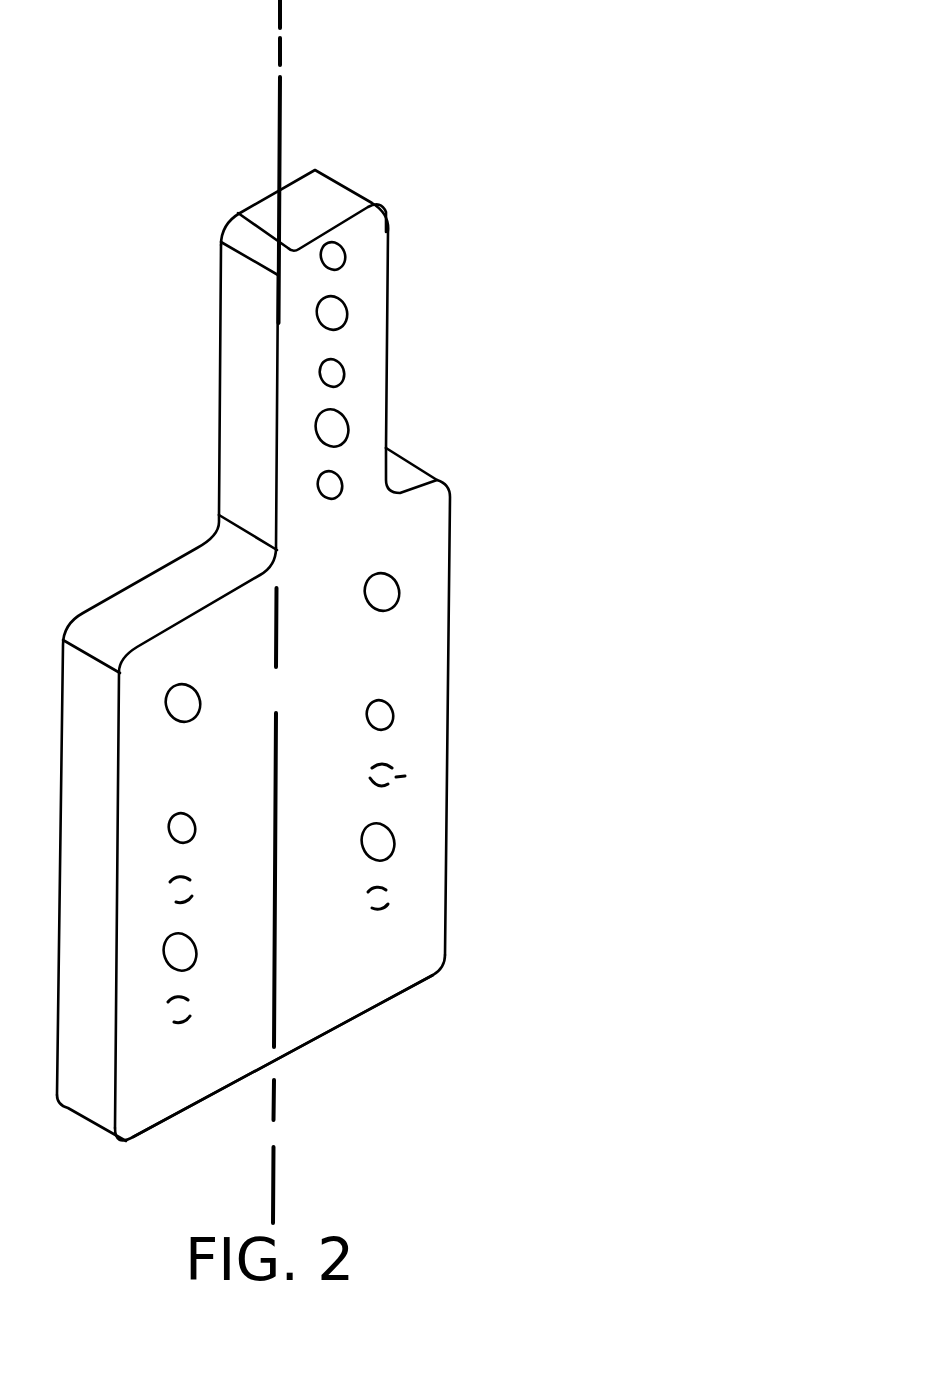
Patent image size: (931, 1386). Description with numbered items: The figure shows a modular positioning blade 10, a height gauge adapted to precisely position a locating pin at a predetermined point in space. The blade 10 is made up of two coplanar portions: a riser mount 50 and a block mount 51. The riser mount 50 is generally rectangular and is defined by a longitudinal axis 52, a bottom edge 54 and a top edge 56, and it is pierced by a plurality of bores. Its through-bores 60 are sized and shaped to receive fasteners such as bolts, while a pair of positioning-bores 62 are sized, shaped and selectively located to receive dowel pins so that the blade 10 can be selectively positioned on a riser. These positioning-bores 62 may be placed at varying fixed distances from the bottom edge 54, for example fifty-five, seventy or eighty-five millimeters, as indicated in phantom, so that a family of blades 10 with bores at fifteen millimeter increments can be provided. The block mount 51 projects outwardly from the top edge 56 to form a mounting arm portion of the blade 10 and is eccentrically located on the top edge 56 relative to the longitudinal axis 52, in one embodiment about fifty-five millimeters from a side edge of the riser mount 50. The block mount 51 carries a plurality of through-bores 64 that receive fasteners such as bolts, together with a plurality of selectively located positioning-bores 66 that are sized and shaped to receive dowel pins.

The modular positioning blade 10 is at (377, 655).
The riser mount 50 is at (433, 843).
The block mount 51 is at (375, 294).
The longitudinal axis 52 is at (278, 117).
The bottom edge 54 is at (333, 1030).
The top edge 56 is at (147, 605).
The through-bores 60 is at (395, 591).
The positioning-bores 62 is at (497, 735).
The through-bores 64 is at (343, 309).
The positioning-bores 66 is at (341, 372).